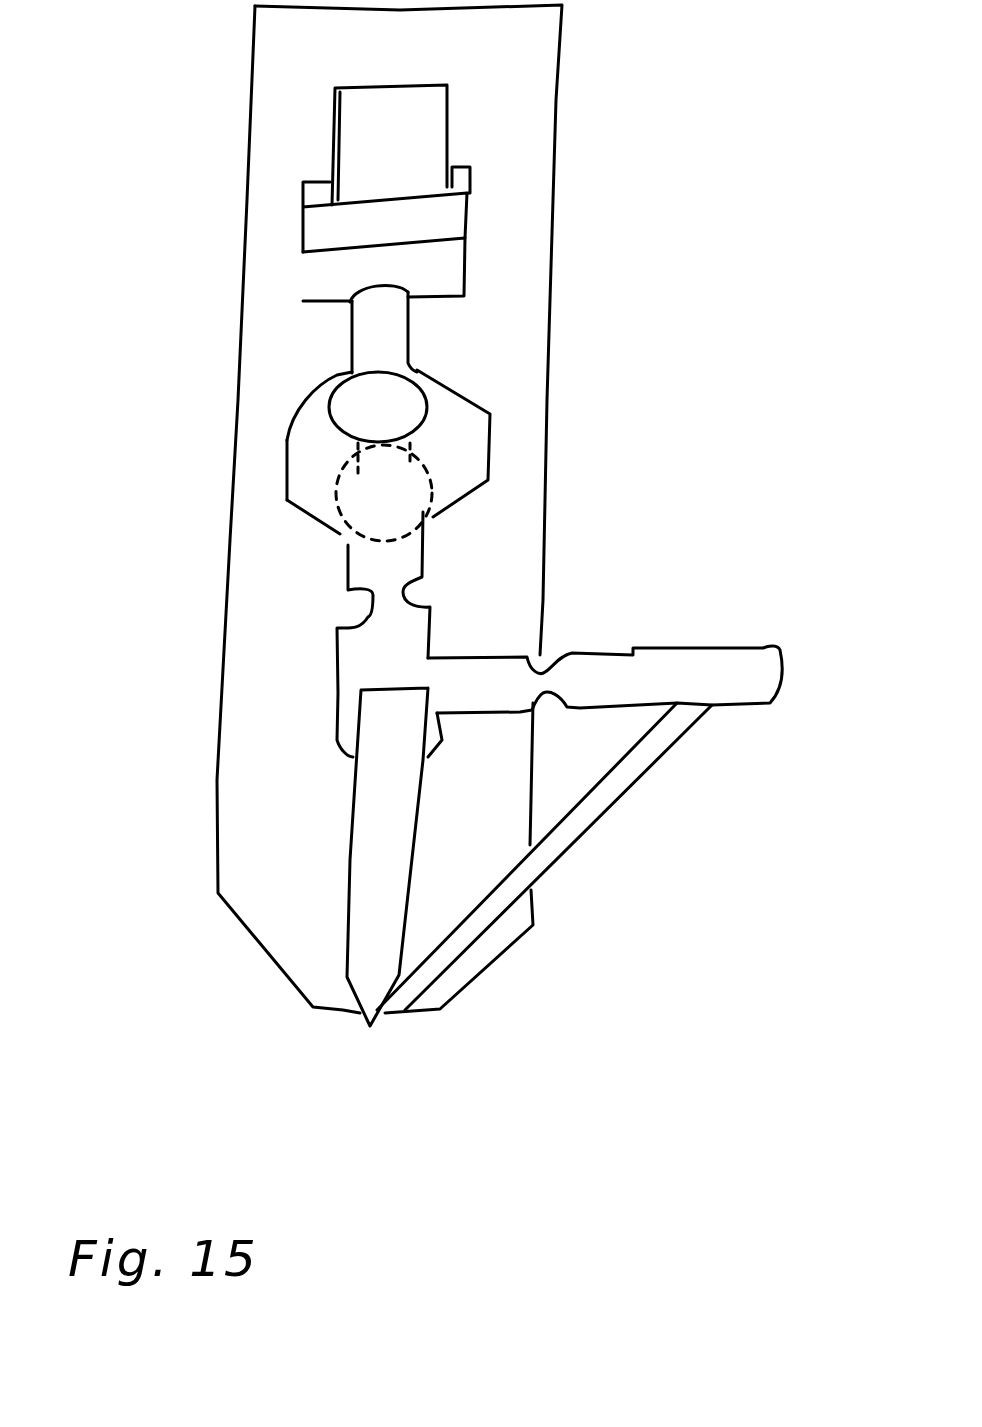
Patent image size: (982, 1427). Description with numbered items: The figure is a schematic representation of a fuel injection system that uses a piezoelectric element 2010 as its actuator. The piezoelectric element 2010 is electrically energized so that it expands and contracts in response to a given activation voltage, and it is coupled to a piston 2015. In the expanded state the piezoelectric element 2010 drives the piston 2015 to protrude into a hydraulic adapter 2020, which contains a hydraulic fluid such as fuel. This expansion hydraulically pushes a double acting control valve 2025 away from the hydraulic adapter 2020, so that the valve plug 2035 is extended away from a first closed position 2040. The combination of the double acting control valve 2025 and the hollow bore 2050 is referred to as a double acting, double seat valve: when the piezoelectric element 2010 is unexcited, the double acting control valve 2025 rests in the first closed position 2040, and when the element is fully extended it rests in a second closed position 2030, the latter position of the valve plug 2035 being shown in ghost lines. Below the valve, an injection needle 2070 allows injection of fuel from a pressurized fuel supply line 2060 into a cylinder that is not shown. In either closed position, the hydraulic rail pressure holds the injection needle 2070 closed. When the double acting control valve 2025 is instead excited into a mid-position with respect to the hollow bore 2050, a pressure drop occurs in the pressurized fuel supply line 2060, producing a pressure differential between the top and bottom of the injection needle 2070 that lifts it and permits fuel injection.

The piezoelectric element 2010 is at (437, 118).
The piston 2015 is at (290, 228).
The hydraulic adapter 2020 is at (315, 278).
The double acting control valve 2025 is at (378, 343).
The first closed position 2040 is at (322, 377).
The hollow bore 2050 is at (490, 450).
The valve plug 2035 is at (342, 503).
The second closed position 2030 is at (432, 516).
The pressurized fuel supply line 2060 is at (725, 647).
The injection needle 2070 is at (388, 838).